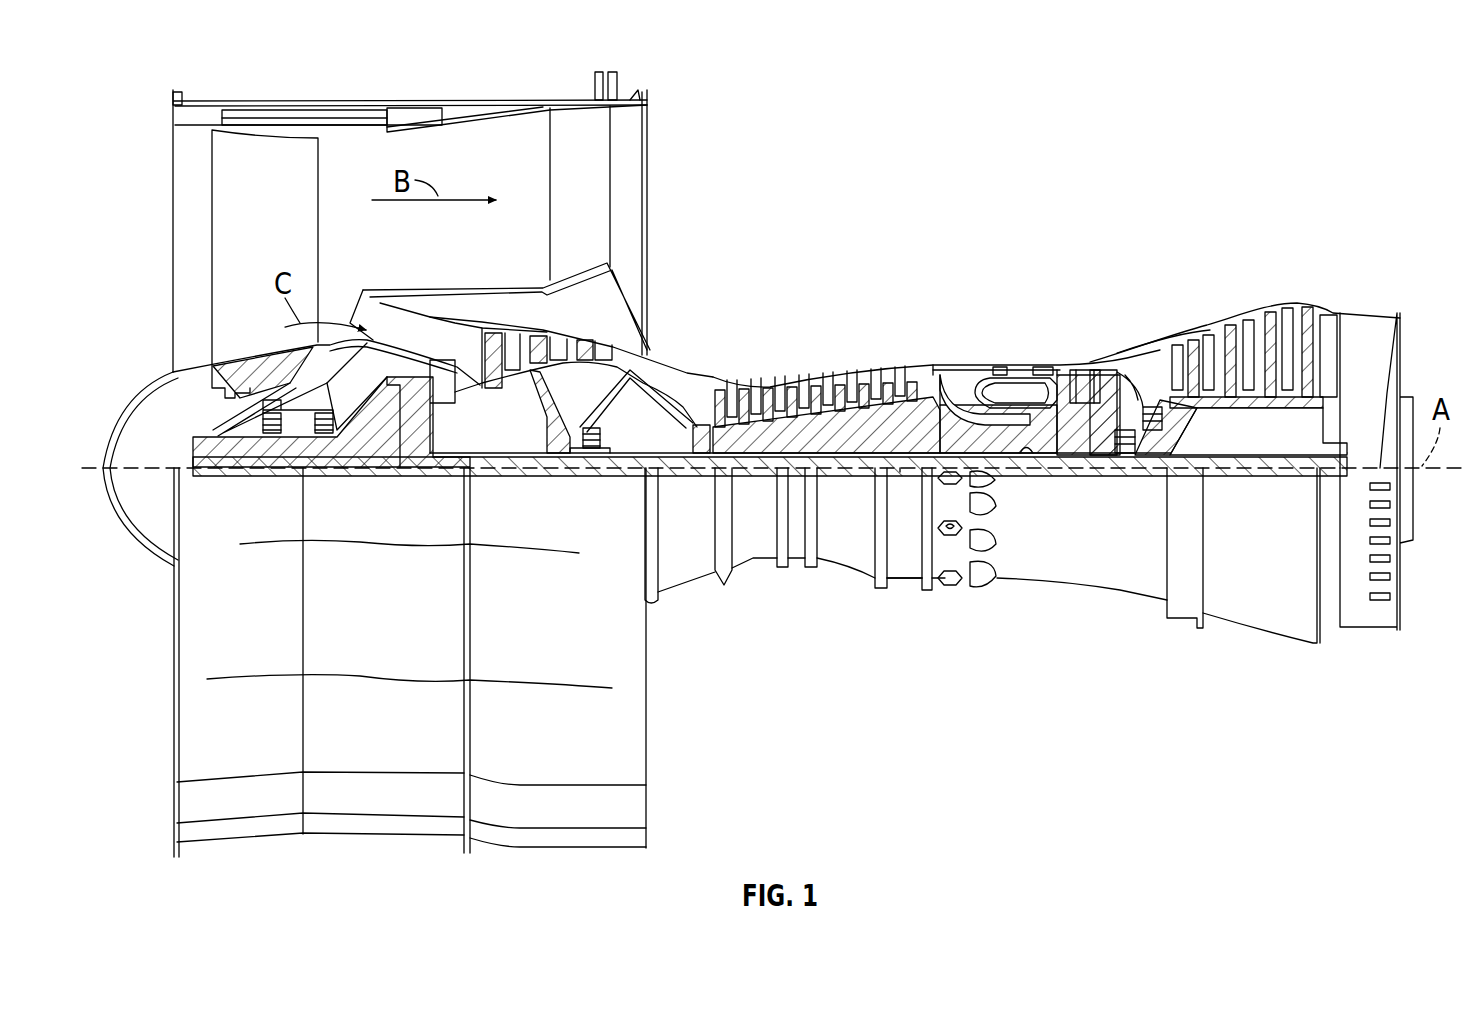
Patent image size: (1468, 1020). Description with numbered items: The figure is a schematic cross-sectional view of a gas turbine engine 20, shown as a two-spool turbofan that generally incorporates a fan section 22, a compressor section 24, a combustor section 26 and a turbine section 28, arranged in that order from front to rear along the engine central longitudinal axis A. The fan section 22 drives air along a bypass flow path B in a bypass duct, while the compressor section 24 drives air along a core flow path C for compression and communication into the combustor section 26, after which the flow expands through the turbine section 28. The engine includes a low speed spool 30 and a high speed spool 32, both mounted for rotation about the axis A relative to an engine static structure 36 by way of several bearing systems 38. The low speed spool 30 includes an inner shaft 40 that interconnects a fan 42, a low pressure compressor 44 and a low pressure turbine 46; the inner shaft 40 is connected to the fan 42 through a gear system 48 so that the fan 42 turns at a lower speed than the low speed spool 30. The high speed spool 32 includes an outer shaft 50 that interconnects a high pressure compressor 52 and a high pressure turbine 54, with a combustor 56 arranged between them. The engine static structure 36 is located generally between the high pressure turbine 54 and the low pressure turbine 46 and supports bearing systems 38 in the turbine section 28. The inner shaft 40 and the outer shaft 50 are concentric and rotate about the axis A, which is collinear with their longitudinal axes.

The gas turbine engine 20 is at (1220, 136).
The fan section 22 is at (280, 90).
The compressor section 24 is at (835, 323).
The combustor section 26 is at (998, 323).
The turbine section 28 is at (1150, 308).
The low speed spool 30 is at (868, 476).
The high speed spool 32 is at (918, 412).
The engine static structure 36 is at (904, 595).
The bearing systems 38 is at (272, 434).
The inner shaft 40 is at (660, 472).
The fan 42 is at (290, 229).
The low pressure compressor 44 is at (560, 343).
The low pressure turbine 46 is at (1252, 345).
The gear system 48 is at (410, 432).
The outer shaft 50 is at (1030, 454).
The high pressure compressor 52 is at (800, 406).
The high pressure turbine 54 is at (1086, 366).
The combustor 56 is at (1012, 385).